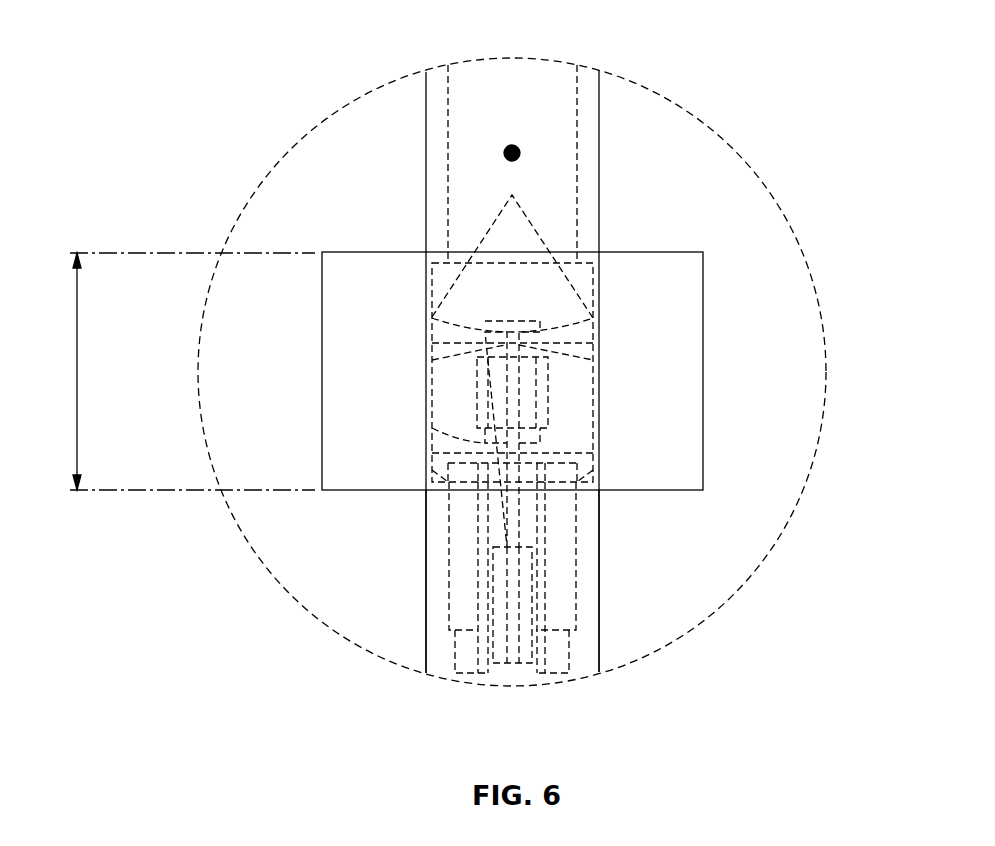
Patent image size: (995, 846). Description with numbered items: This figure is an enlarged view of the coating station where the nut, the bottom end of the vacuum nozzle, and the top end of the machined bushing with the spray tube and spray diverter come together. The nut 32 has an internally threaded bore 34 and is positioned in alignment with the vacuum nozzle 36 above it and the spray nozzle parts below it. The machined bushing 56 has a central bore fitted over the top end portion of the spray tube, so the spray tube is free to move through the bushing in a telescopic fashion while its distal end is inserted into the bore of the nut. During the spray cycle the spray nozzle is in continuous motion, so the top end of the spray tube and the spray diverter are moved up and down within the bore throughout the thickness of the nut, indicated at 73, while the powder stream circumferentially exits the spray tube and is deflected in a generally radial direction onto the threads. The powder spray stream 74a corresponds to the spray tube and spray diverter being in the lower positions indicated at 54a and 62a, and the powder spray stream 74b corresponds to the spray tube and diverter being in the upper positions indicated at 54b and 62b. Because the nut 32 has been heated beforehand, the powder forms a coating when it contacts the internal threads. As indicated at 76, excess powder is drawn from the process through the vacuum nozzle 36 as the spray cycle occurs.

The nut 32 is at (703, 382).
The internally threaded bore 34 is at (426, 380).
The vacuum nozzle 36 is at (599, 114).
The spray tube position 54a is at (545, 505).
The spray tube position 54b is at (548, 385).
The machined bushing 56 is at (599, 623).
The spray diverter position 62a is at (540, 442).
The spray diverter position 62b is at (512, 317).
The thickness of the nut 73 is at (77, 358).
The powder spray stream 74a is at (445, 432).
The powder spray stream 74b is at (462, 342).
The excess powder draw 76 is at (512, 145).